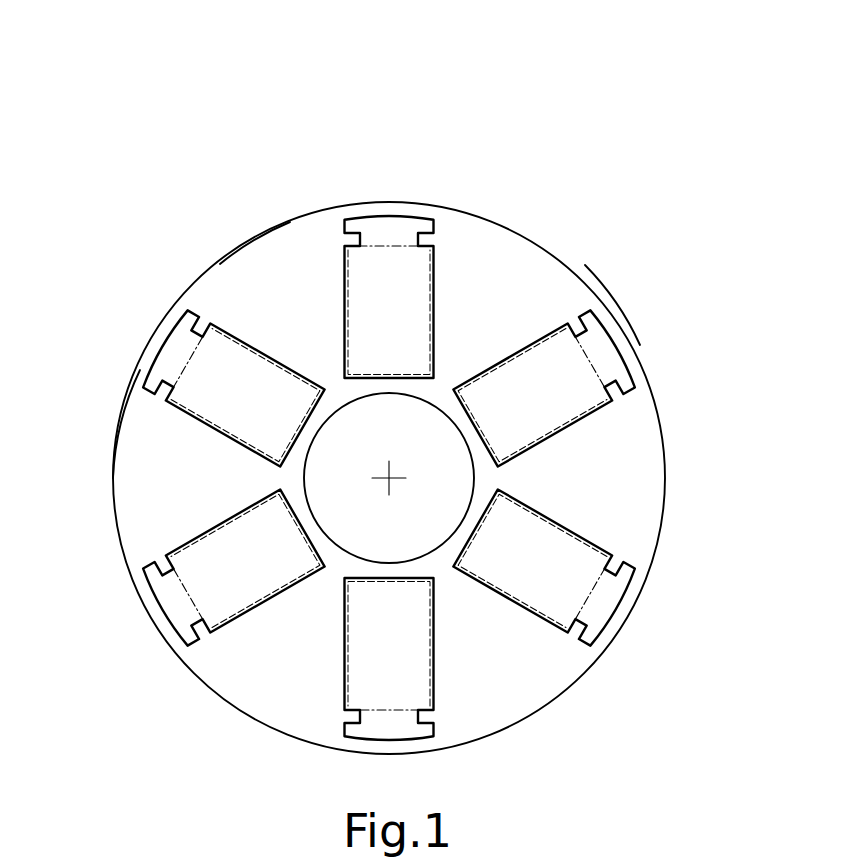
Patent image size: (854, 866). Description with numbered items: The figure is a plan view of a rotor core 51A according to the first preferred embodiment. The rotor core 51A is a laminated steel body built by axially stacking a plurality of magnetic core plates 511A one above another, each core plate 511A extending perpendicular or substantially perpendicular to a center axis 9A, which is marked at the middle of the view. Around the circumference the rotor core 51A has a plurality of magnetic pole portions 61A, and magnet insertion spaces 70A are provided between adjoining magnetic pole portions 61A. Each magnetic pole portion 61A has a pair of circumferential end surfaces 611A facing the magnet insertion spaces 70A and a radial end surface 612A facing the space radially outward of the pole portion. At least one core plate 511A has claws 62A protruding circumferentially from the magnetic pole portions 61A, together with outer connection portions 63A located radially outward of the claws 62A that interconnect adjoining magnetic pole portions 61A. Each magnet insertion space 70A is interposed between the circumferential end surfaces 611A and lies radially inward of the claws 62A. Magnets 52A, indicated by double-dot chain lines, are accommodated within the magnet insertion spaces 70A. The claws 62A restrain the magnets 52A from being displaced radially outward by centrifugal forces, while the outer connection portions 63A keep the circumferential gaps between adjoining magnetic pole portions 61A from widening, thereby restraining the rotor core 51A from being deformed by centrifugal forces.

The rotor core 51A is at (354, 105).
The core plate 511A is at (512, 672).
The radial end surface 612A is at (273, 223).
The circumferential end surface 611A is at (348, 272).
The magnetic pole portion 61A is at (290, 300).
The magnet insertion space 70A is at (533, 397).
The claw 62A is at (593, 312).
The outer connection portion 63A is at (627, 343).
The center axis 9A is at (383, 470).
The magnet 52A is at (570, 580).